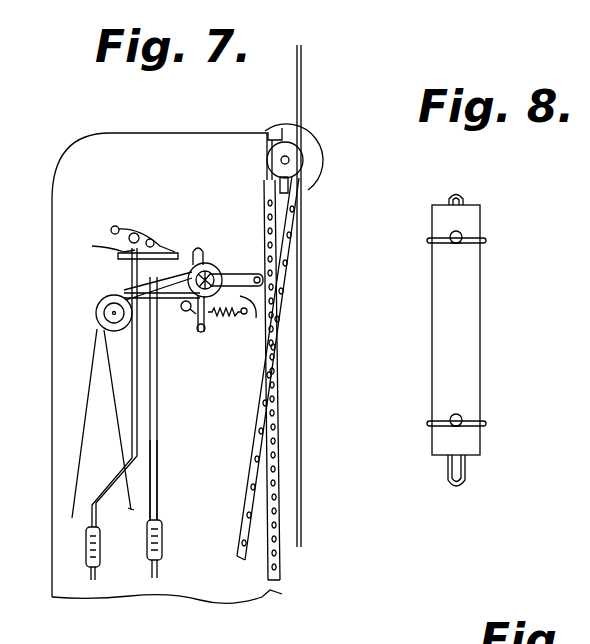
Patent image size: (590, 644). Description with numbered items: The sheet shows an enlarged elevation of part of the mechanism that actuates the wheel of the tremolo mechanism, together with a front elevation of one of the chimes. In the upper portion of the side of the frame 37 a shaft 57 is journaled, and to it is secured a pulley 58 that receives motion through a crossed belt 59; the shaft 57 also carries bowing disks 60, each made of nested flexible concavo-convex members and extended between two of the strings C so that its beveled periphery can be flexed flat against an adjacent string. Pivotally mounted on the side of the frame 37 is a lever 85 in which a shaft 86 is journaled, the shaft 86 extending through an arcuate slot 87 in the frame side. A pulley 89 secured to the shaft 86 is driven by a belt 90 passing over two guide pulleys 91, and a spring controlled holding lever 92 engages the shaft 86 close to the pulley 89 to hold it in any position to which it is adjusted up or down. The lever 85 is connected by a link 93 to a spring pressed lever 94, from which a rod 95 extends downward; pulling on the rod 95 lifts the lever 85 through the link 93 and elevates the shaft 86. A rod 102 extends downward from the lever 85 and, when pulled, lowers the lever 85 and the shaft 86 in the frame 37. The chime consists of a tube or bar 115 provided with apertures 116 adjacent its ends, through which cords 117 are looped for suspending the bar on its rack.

In FIG. 7, the frame 37 is at (100, 134).
In FIG. 7, the strings C is at (300, 74).
In FIG. 7, the shaft 57 is at (288, 158).
In FIG. 7, the pulley 58 is at (300, 167).
In FIG. 7, the bowing disk 60 is at (320, 160).
In FIG. 7, the crossed belt 59 is at (262, 486).
In FIG. 7, the lever 85 is at (237, 270).
In FIG. 7, the shaft 86 is at (199, 262).
In FIG. 7, the arcuate slot 87 is at (205, 258).
In FIG. 7, the pulley 89 is at (233, 322).
In FIG. 7, the belt 90 is at (128, 291).
In FIG. 7, the guide pulley 91 is at (104, 310).
In FIG. 7, the spring controlled holding lever 92 is at (200, 333).
In FIG. 7, the link 93 is at (170, 248).
In FIG. 7, the spring pressed lever 94 is at (106, 238).
In FIG. 7, the rod 95 is at (86, 527).
In FIG. 7, the rod 102 is at (157, 474).
In FIG. 8, the tube or bar 115 is at (436, 296).
In FIG. 8, the aperture 116 is at (460, 236).
In FIG. 8, the cord 117 is at (466, 200).